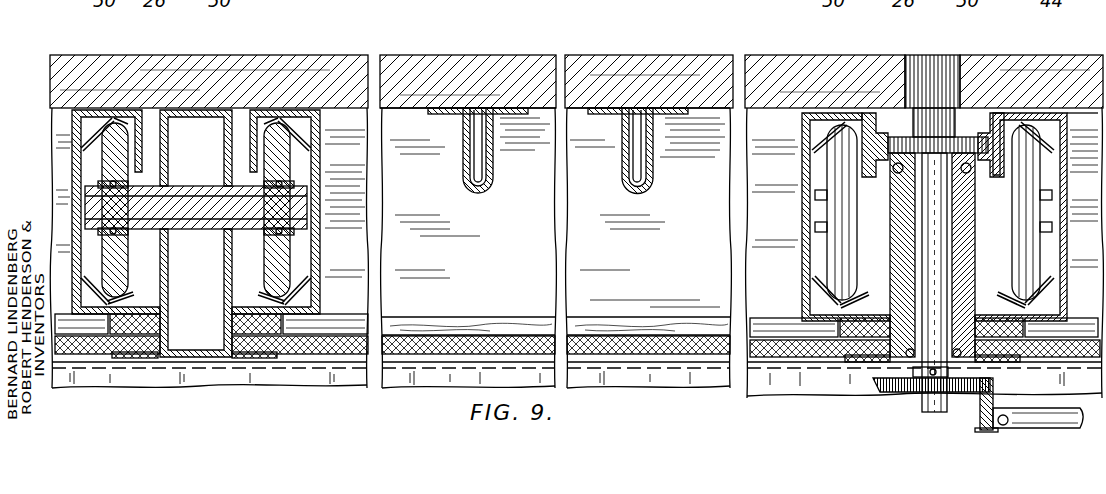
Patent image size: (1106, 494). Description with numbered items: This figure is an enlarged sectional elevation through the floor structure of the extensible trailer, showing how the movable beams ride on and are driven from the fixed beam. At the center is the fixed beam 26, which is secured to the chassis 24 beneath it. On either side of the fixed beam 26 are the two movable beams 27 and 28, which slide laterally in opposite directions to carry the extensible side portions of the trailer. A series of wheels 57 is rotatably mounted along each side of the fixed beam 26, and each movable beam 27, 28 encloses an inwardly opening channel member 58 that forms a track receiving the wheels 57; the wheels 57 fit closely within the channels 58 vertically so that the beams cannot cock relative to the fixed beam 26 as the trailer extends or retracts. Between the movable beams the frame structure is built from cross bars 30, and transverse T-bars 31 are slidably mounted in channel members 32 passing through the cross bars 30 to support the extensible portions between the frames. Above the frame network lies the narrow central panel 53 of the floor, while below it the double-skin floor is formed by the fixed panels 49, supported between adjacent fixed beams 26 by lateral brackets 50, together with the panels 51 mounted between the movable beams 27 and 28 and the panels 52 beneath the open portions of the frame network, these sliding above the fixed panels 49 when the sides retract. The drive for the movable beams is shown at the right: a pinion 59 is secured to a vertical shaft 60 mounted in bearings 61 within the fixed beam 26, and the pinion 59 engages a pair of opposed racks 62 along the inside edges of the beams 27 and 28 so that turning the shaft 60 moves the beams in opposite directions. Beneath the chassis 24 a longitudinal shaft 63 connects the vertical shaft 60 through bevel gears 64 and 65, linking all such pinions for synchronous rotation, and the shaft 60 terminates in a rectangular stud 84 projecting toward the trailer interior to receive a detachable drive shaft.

The chassis 24 is at (798, 393).
The fixed beam 26 is at (190, 113).
The movable beam 27 is at (138, 116).
The movable beam 28 is at (282, 116).
The cross bar 30 is at (660, 296).
The T-bar 31 is at (469, 108).
The channel member 32 is at (624, 200).
The fixed panel 49 is at (698, 355).
The lateral bracket 50 is at (138, 358).
The panel 51 is at (505, 318).
The panel 52 is at (1080, 318).
The central panel 53 is at (250, 62).
The wheel 57 is at (132, 240).
The channel member 58 is at (95, 130).
The pinion 59 is at (932, 137).
The vertical shaft 60 is at (921, 406).
The bearing 61 is at (912, 168).
The rack 62 is at (870, 140).
The longitudinal shaft 63 is at (1068, 410).
The bevel gear 64 is at (882, 392).
The bevel gear 65 is at (980, 418).
The rectangular stud 84 is at (940, 137).